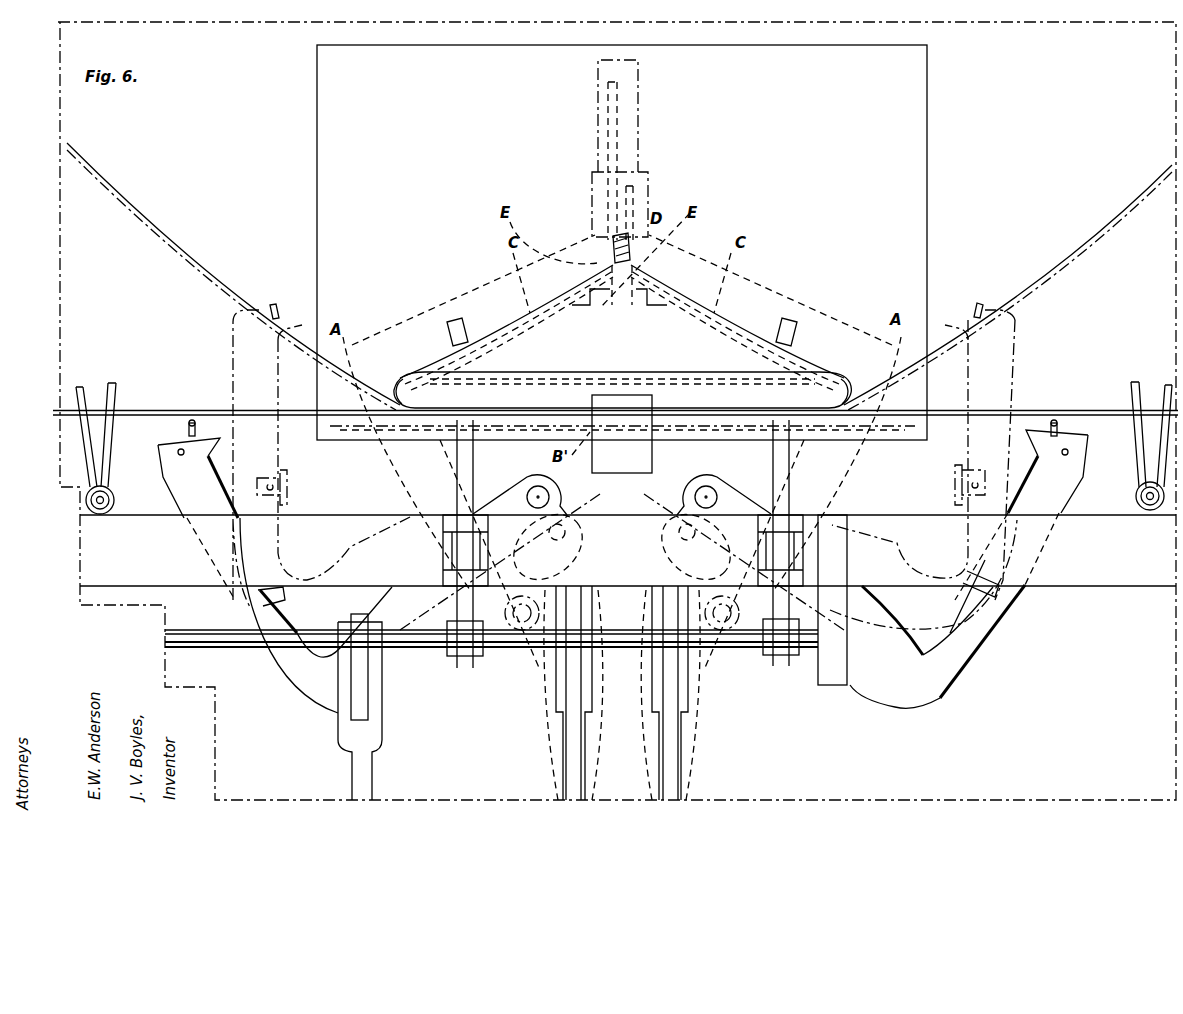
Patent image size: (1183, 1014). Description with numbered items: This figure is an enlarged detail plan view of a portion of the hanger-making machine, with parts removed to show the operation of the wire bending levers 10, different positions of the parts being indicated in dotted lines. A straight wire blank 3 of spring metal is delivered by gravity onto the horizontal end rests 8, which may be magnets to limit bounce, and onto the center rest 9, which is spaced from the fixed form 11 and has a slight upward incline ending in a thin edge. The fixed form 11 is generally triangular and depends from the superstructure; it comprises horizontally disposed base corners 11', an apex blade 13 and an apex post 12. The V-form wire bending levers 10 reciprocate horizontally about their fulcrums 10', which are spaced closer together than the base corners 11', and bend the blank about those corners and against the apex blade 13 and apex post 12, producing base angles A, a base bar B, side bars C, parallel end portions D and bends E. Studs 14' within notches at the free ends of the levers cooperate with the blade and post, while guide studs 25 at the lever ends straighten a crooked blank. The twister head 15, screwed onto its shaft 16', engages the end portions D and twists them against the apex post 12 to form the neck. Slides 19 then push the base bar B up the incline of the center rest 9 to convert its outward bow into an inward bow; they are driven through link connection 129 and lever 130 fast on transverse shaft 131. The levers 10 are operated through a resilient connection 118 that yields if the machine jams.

The wire blank 3 is at (190, 410).
The end rest 8 is at (118, 398).
The center rest 9 is at (652, 458).
The wire bending lever 10 is at (618, 483).
The fulcrum 10' is at (622, 552).
The fixed form 11 is at (622, 336).
The base corner 11' is at (622, 391).
The apex post 12 is at (613, 252).
The apex blade 13 is at (634, 266).
The stud 14' is at (607, 474).
The twister head 15 is at (649, 191).
The shaft 16' is at (641, 150).
The slide 19 is at (458, 484).
The guide stud 25 is at (186, 432).
The resilient operating connection 118 is at (675, 768).
The link connection 129 is at (352, 777).
The lever 130 is at (363, 650).
The transverse shaft 131 is at (248, 652).